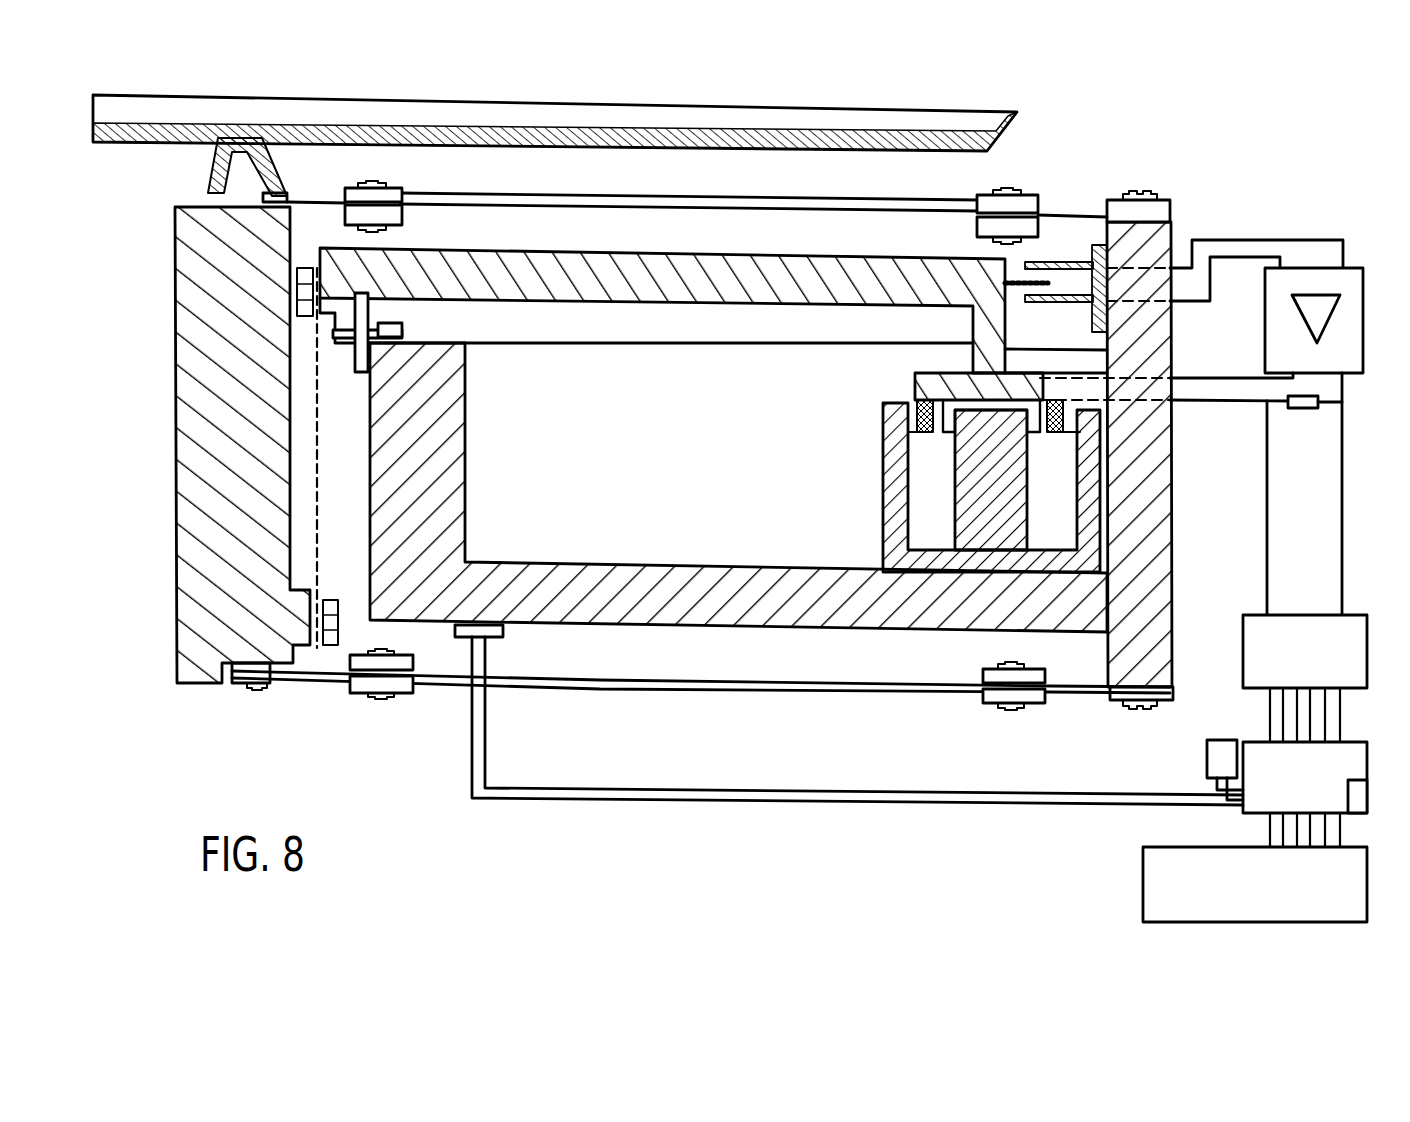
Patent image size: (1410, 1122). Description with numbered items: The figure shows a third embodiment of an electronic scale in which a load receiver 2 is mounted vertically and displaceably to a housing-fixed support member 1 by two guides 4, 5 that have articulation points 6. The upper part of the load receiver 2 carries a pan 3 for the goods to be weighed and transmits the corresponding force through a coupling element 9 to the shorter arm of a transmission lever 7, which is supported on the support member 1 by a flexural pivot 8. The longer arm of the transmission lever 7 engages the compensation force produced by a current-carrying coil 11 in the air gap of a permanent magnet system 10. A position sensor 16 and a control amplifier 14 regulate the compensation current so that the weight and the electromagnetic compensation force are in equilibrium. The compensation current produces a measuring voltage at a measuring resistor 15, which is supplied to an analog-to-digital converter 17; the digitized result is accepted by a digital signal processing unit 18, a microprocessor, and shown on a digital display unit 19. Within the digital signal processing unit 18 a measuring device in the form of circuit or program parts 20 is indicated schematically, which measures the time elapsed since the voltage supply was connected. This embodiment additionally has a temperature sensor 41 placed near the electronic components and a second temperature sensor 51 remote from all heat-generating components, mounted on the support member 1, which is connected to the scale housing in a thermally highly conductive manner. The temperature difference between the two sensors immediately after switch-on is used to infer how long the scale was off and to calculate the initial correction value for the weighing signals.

The support member 1 is at (452, 405).
The load receiver 2 is at (195, 455).
The pan 3 is at (1012, 125).
The guide 4 is at (735, 200).
The guide 5 is at (587, 690).
The articulation points 6 is at (312, 203).
The transmission lever 7 is at (540, 258).
The flexural pivot 8 is at (352, 360).
The coupling element 9 is at (320, 505).
The permanent magnet system 10 is at (890, 530).
The current-carrying coil 11 is at (913, 400).
The control amplifier 14 is at (1325, 280).
The measuring resistor 15 is at (1290, 412).
The position sensor 16 is at (1050, 257).
The analog-to-digital converter 17 is at (1255, 620).
The digital signal processing unit 18 is at (1257, 748).
The digital display unit 19 is at (1157, 892).
The measuring device (circuit or program parts) 20 is at (1355, 805).
The temperature sensor 41 is at (1220, 752).
The temperature sensor 51 is at (500, 631).